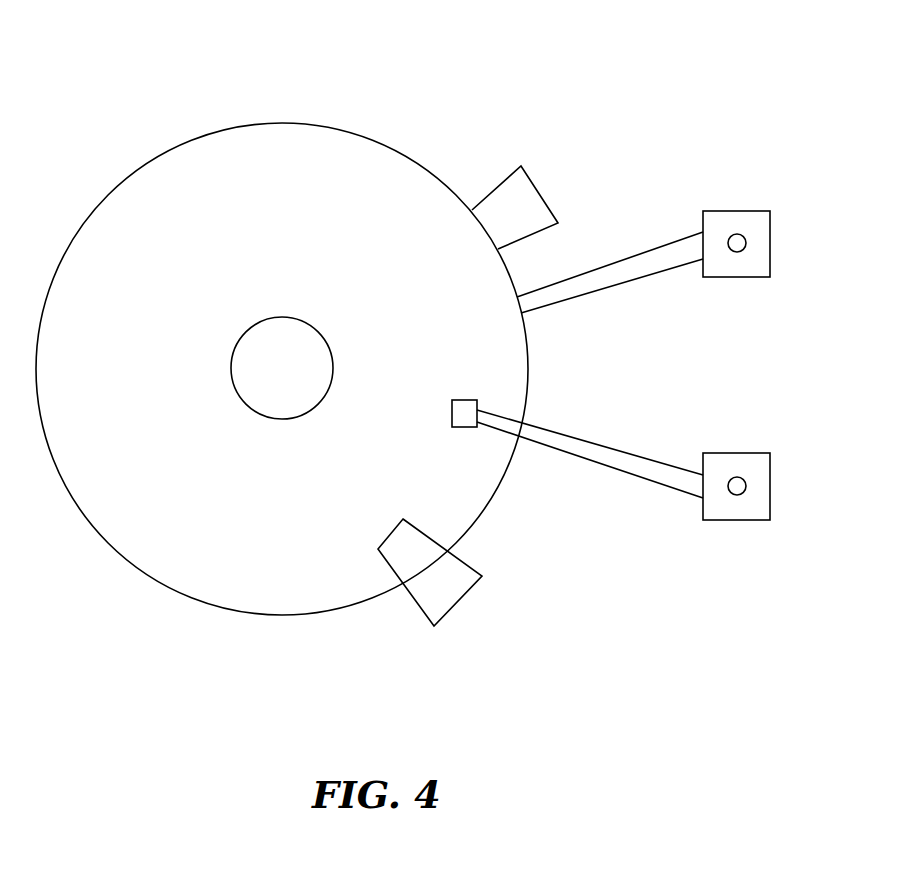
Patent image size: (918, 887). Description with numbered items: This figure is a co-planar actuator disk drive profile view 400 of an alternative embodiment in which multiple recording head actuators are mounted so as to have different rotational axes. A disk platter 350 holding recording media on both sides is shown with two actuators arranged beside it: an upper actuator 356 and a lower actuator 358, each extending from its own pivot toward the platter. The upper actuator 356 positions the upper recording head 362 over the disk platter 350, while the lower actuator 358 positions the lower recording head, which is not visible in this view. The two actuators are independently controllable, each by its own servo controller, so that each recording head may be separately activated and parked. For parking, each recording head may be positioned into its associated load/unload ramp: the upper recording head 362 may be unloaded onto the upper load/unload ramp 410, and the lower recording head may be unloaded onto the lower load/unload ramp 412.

The co-planar actuator disk drive profile view 400 is at (579, 35).
The disk platter 350 is at (277, 123).
The lower load/unload ramp 412 is at (543, 192).
The lower actuator 358 is at (617, 258).
The upper actuator 356 is at (617, 445).
The upper recording head 362 is at (462, 398).
The upper load/unload ramp 410 is at (463, 597).